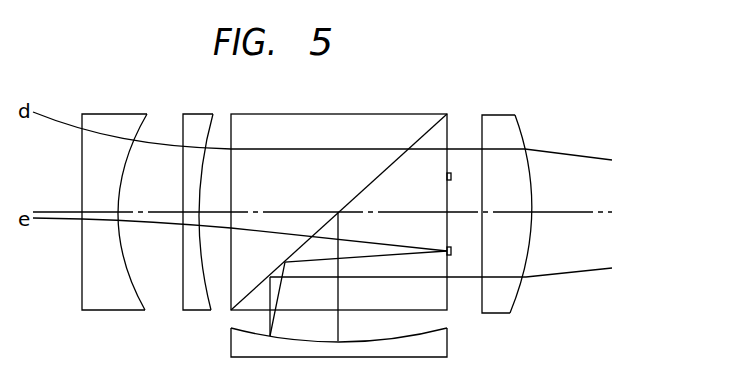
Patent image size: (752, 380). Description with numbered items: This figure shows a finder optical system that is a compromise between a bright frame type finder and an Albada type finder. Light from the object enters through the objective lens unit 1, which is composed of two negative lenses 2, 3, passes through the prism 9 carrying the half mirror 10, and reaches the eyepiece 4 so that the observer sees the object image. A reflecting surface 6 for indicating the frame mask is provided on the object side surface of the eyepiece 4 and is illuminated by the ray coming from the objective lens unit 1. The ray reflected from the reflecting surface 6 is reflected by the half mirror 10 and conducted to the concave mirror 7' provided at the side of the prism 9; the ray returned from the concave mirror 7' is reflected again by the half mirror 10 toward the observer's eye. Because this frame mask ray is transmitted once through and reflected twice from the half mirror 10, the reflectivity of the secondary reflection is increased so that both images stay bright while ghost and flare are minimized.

The objective lens unit 1 is at (218, 106).
The negative lens 2 is at (110, 312).
The negative lens 3 is at (195, 312).
The eyepiece 4 is at (502, 115).
The reflecting surface 6 is at (451, 176).
The concave mirror 7' is at (357, 341).
The prism 9 is at (348, 114).
The half mirror 10 is at (383, 172).